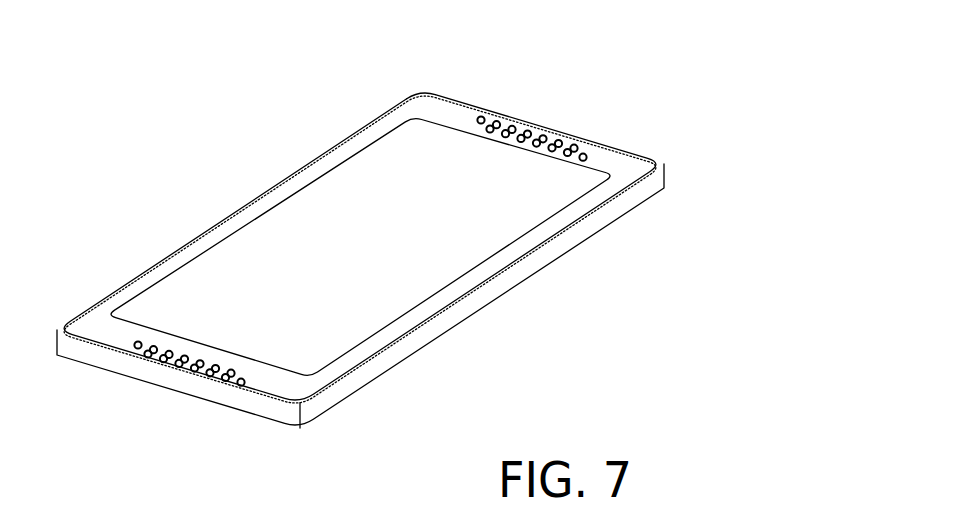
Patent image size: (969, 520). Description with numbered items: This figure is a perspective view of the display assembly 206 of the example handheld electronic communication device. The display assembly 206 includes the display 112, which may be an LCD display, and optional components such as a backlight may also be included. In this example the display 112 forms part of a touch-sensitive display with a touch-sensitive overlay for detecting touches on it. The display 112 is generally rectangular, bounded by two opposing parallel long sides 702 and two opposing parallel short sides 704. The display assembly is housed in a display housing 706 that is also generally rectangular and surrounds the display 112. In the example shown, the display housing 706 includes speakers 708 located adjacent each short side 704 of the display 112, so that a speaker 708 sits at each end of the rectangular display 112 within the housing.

The display 112 is at (407, 142).
The display assembly 206 is at (666, 168).
The long sides 702 is at (256, 212).
The short sides 704 is at (588, 165).
The display housing 706 is at (421, 110).
The speakers 708 is at (527, 127).